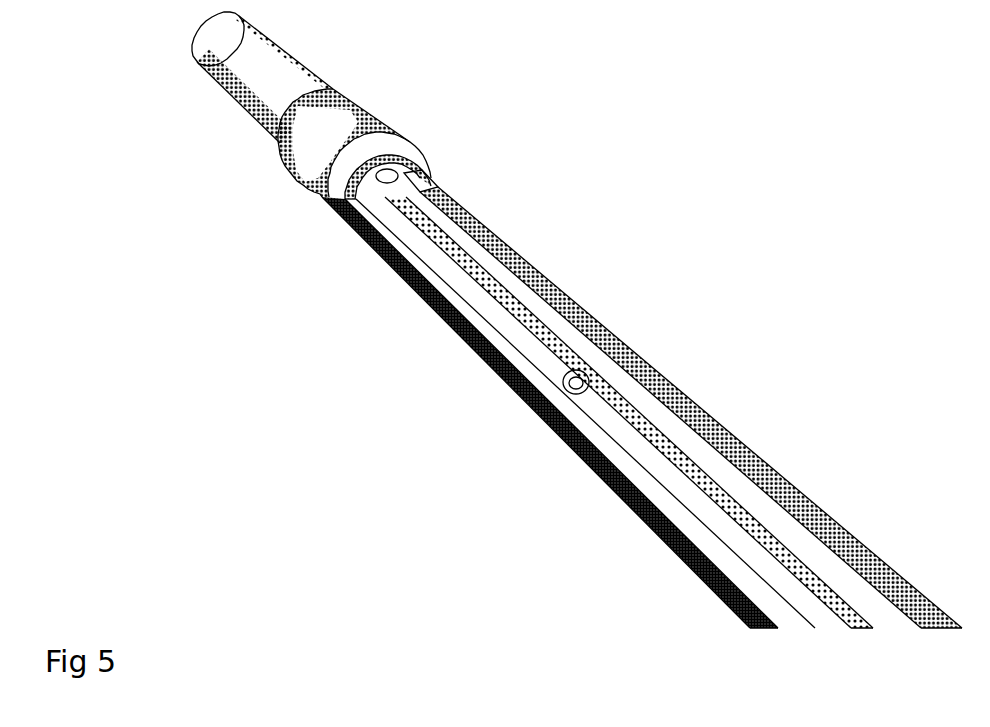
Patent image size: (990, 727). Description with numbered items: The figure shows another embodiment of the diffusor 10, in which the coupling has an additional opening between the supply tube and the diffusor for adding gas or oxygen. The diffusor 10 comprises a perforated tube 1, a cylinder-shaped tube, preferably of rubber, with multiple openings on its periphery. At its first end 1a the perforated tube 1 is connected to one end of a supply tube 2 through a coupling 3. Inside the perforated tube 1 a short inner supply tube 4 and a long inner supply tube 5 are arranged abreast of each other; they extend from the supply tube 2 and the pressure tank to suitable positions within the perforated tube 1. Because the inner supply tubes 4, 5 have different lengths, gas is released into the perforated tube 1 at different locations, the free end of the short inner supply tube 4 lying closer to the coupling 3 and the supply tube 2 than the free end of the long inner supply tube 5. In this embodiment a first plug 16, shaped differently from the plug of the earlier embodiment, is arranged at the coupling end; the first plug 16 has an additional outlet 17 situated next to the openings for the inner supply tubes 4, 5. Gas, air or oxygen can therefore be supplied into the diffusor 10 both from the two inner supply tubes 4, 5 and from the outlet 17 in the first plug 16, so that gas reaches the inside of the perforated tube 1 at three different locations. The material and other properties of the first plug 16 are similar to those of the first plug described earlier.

The perforated tube 1 is at (472, 347).
The first end 1a is at (340, 182).
The supply tube 2 is at (246, 73).
The coupling 3 is at (363, 109).
The short inner supply tube 4 is at (471, 277).
The long inner supply tube 5 is at (547, 312).
The diffusor 10 is at (432, 522).
The first plug 16 is at (418, 178).
The outlet 17 is at (414, 168).